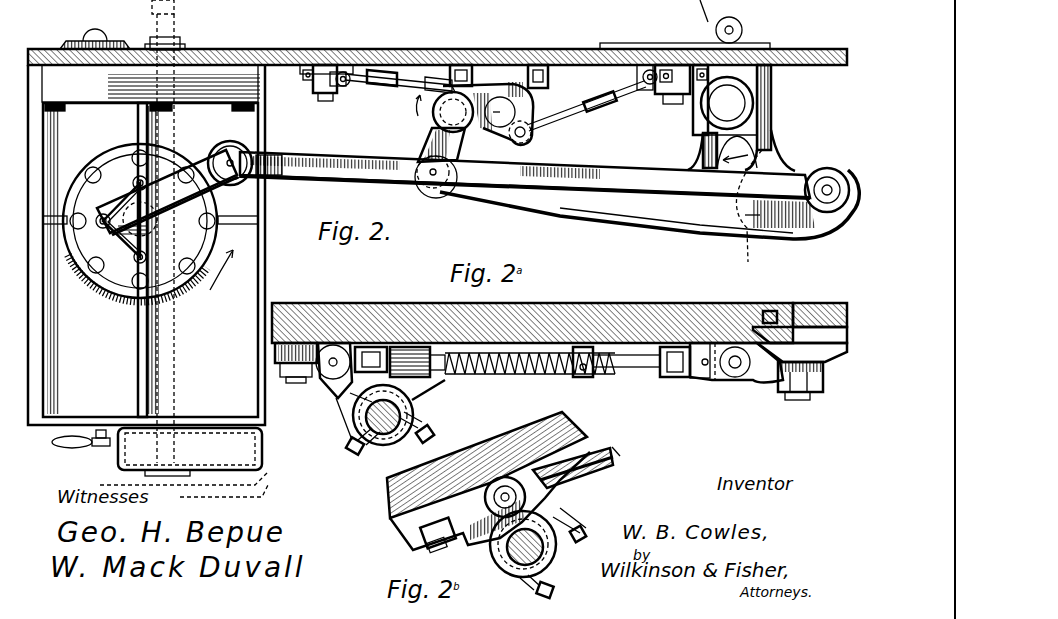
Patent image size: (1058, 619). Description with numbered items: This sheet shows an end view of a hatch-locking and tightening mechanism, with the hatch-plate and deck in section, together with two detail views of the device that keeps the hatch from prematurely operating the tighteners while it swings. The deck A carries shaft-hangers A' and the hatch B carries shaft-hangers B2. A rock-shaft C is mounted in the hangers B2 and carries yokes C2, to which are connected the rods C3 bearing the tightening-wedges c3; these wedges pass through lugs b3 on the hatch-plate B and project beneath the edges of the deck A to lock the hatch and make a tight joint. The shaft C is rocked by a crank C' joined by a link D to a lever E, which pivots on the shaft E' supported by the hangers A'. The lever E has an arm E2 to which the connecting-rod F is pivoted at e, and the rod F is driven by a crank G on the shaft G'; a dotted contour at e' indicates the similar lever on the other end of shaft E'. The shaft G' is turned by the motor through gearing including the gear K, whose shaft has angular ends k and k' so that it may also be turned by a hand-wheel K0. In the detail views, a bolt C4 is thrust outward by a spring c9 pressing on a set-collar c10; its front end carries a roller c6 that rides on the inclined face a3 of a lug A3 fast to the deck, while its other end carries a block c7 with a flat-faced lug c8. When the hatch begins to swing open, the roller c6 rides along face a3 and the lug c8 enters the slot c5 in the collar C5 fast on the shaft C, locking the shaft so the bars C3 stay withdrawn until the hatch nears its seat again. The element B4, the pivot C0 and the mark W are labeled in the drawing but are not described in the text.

In FIG. 2, the deck A is at (437, 32).
In FIG. 2A, the deck A is at (800, 310).
In FIG. 2, the shaft-hangers A' is at (742, 118).
In FIG. 2A, the lug A3 is at (828, 362).
In FIG. 2, the hatch B is at (487, 66).
In FIG. 2A, the hatch B is at (660, 312).
In FIG. 2B, the hatch B is at (507, 446).
In FIG. 2, the shaft-hangers B2 is at (540, 72).
In FIG. 2A, the block B4 is at (405, 345).
In FIG. 2B, the block B4 is at (598, 468).
In FIG. 2, the rock-shaft C is at (497, 113).
In FIG. 2A, the rock-shaft C is at (371, 433).
In FIG. 2B, the rock-shaft C is at (523, 560).
In FIG. 2, the crank C' is at (456, 127).
In FIG. 2, the pivot C0 is at (445, 92).
In FIG. 2, the yokes C2 is at (548, 120).
In FIG. 2, the rods C3 is at (416, 76).
In FIG. 2, the tightening-wedges c3 is at (340, 95).
In FIG. 2, the lugs b3 is at (325, 64).
In FIG. 2, the link D is at (433, 143).
In FIG. 2, the lever E is at (649, 213).
In FIG. 2, the shaft E' is at (727, 103).
In FIG. 2, the arm E2 is at (815, 231).
In FIG. 2, the pivot e is at (777, 211).
In FIG. 2, the lever contour e' is at (755, 246).
In FIG. 2, the connecting-rod F is at (388, 167).
In FIG. 2, the crank G is at (174, 188).
In FIG. 2, the shaft G' is at (140, 223).
In FIG. 2, the direction of rotation W is at (216, 287).
In FIG. 2, the gear K is at (150, 18).
In FIG. 2, the angular end k' is at (174, 36).
In FIG. 2, the angular end k is at (157, 452).
In FIG. 2, the hand-wheel K0 is at (203, 473).
In FIG. 2A, the block c7 is at (333, 345).
In FIG. 2B, the block c7 is at (498, 486).
In FIG. 2A, the lug c8 is at (340, 386).
In FIG. 2B, the lug c8 is at (492, 540).
In FIG. 2A, the spring c9 is at (535, 355).
In FIG. 2A, the set-collar c10 is at (588, 352).
In FIG. 2A, the inclined face a3 is at (757, 323).
In FIG. 2A, the bolt C4 is at (604, 368).
In FIG. 2B, the bolt C4 is at (605, 450).
In FIG. 2A, the collar C5 is at (405, 398).
In FIG. 2B, the collar C5 is at (556, 546).
In FIG. 2B, the slot c5 is at (566, 526).
In FIG. 2A, the roller c6 is at (742, 380).